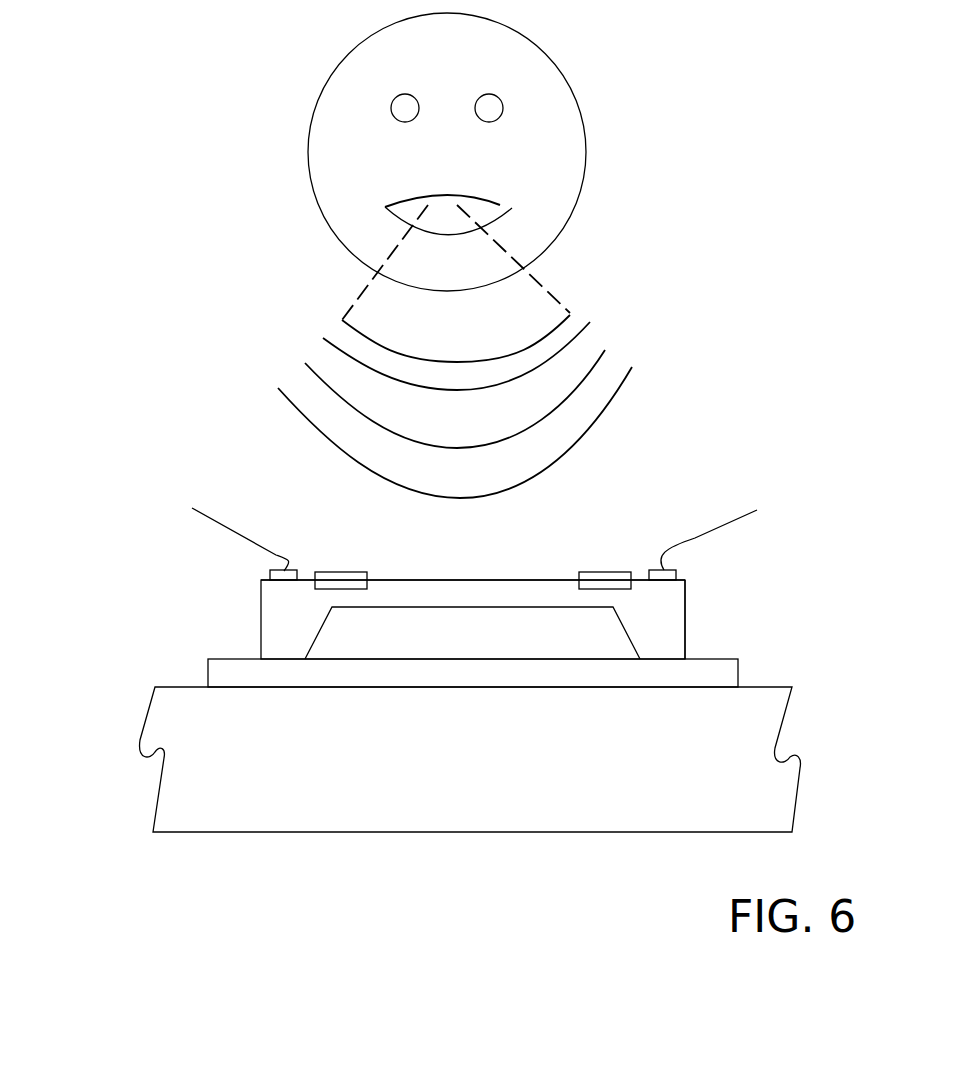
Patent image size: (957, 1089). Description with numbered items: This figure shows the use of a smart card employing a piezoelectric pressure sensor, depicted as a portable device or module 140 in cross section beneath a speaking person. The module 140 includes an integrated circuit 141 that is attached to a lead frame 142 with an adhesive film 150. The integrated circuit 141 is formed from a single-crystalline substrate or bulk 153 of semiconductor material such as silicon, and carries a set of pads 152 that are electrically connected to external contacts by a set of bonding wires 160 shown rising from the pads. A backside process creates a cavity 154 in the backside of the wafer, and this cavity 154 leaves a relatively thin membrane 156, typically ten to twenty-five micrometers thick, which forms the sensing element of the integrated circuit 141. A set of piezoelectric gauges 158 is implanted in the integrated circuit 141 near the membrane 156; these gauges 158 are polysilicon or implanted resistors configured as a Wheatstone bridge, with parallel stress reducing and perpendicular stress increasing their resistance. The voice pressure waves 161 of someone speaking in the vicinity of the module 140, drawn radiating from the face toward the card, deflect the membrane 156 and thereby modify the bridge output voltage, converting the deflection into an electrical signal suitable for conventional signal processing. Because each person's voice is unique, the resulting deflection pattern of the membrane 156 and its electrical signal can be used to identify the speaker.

The portable device or module 140 is at (137, 632).
The integrated circuit 141 is at (685, 608).
The lead frame 142 is at (722, 813).
The adhesive film 150 is at (359, 683).
The pads 152 is at (285, 580).
The single-crystalline substrate or bulk 153 is at (283, 641).
The cavity 154 is at (489, 650).
The membrane 156 is at (487, 603).
The piezoelectric gauges 158 is at (340, 578).
The bonding wires 160 is at (222, 523).
The voice pressure waves 161 is at (600, 417).